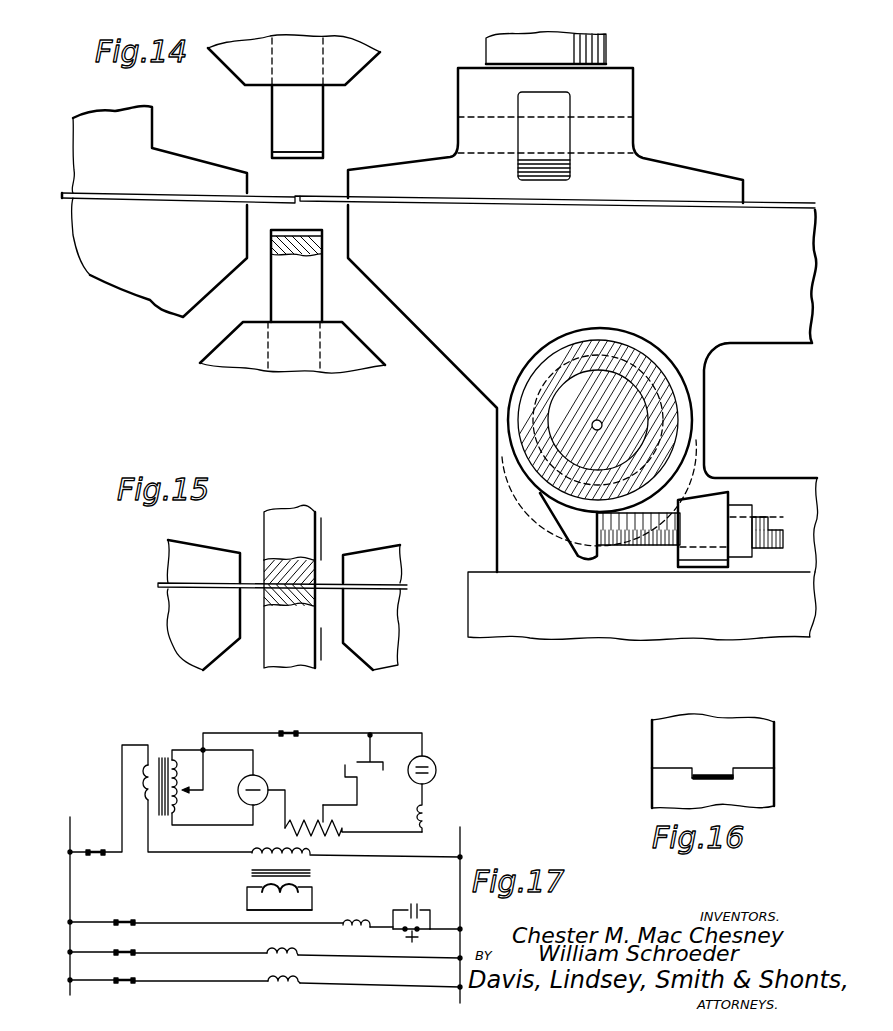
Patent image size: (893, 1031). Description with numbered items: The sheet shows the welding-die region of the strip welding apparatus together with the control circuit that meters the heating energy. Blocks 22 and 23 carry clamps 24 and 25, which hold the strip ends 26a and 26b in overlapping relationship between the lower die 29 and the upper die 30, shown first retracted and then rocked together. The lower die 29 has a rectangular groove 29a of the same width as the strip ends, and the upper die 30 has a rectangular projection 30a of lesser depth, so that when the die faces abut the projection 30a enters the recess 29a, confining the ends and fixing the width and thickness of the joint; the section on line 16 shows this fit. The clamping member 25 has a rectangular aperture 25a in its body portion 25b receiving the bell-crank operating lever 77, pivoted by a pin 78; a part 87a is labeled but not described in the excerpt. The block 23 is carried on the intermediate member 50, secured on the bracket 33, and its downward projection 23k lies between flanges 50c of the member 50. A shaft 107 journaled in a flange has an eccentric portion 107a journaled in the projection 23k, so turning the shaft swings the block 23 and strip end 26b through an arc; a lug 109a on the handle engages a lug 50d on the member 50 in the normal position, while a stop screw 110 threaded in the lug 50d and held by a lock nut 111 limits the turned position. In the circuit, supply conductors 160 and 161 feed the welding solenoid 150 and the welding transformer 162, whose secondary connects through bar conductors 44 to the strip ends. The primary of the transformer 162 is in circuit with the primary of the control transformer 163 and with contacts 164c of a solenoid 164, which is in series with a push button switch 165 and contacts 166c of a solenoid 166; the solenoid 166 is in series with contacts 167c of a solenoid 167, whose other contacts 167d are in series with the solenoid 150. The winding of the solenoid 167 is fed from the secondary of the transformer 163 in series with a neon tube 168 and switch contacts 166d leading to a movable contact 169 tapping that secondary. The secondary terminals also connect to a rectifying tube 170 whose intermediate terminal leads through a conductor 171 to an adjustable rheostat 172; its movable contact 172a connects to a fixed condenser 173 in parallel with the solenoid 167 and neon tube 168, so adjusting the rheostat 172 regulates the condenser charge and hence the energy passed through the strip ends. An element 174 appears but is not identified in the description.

In FIG. 14, the block 22 is at (159, 257).
In FIG. 15, the block 22 is at (203, 629).
In FIG. 14, the block 23 is at (582, 388).
In FIG. 15, the block 23 is at (371, 629).
In FIG. 14, the downwardly extending projection 23k is at (704, 375).
In FIG. 14, the clamp 24 is at (154, 152).
In FIG. 15, the clamp 24 is at (203, 561).
In FIG. 14, the clamping member 25 is at (636, 165).
In FIG. 15, the clamping member 25 is at (372, 564).
In FIG. 14, the rectangular aperture 25a is at (576, 87).
In FIG. 14, the body portion 25b is at (627, 82).
In FIG. 14, the strip end 26a is at (260, 197).
In FIG. 14, the strip end 26b is at (330, 197).
In FIG. 17, the strip end 26b is at (257, 913).
In FIG. 14, the lower die 29 is at (313, 293).
In FIG. 15, the lower die 29 is at (268, 647).
In FIG. 16, the lower die 29 is at (767, 787).
In FIG. 14, the rectangular groove 29a is at (277, 235).
In FIG. 16, the rectangular groove 29a is at (698, 772).
In FIG. 14, the upper die 30 is at (313, 122).
In FIG. 15, the upper die 30 is at (267, 528).
In FIG. 16, the upper die 30 is at (767, 740).
In FIG. 14, the rectangular projection 30a is at (268, 157).
In FIG. 16, the rectangular projection 30a is at (715, 774).
In FIG. 14, the bracket 33 is at (550, 628).
In FIG. 17, the bar conductors 44 is at (247, 893).
In FIG. 14, the intermediate member 50 is at (793, 497).
In FIG. 14, the flanges 50c is at (690, 426).
In FIG. 14, the lug 50d is at (693, 565).
In FIG. 14, the operating lever 77 is at (535, 118).
In FIG. 14, the pin 78 is at (518, 117).
In FIG. 14, the threaded block 87a is at (608, 50).
In FIG. 14, the shaft 107 is at (553, 433).
In FIG. 14, the eccentric portion 107a is at (533, 457).
In FIG. 14, the lug 109a is at (563, 538).
In FIG. 14, the stop screw 110 is at (632, 547).
In FIG. 14, the lock nut 111 is at (743, 557).
In FIG. 15, the section line 16 is at (321, 528).
In FIG. 17, the welding solenoid 150 is at (281, 992).
In FIG. 17, the supply conductor 160 is at (463, 835).
In FIG. 17, the supply conductor 161 is at (70, 827).
In FIG. 17, the welding transformer 162 is at (302, 866).
In FIG. 17, the control transformer 163 is at (162, 747).
In FIG. 17, the solenoid 164 is at (351, 936).
In FIG. 17, the contacts 164c is at (95, 848).
In FIG. 17, the push button switch 165 is at (423, 942).
In FIG. 17, the solenoid 166 is at (286, 942).
In FIG. 17, the contacts 166c is at (135, 912).
In FIG. 17, the switch contacts 166d is at (281, 731).
In FIG. 17, the solenoid 167 is at (428, 815).
In FIG. 17, the contacts 167c is at (125, 950).
In FIG. 17, the contacts 167d is at (124, 979).
In FIG. 17, the neon tube 168 is at (434, 765).
In FIG. 17, the movable contact 169 is at (193, 792).
In FIG. 17, the rectifying tube 170 is at (262, 780).
In FIG. 17, the conductor 171 is at (290, 797).
In FIG. 17, the adjustable rheostat 172 is at (338, 835).
In FIG. 17, the movable contact 172a is at (325, 818).
In FIG. 17, the fixed condenser 173 is at (374, 775).
In FIG. 17, the capacitor 174 is at (423, 904).